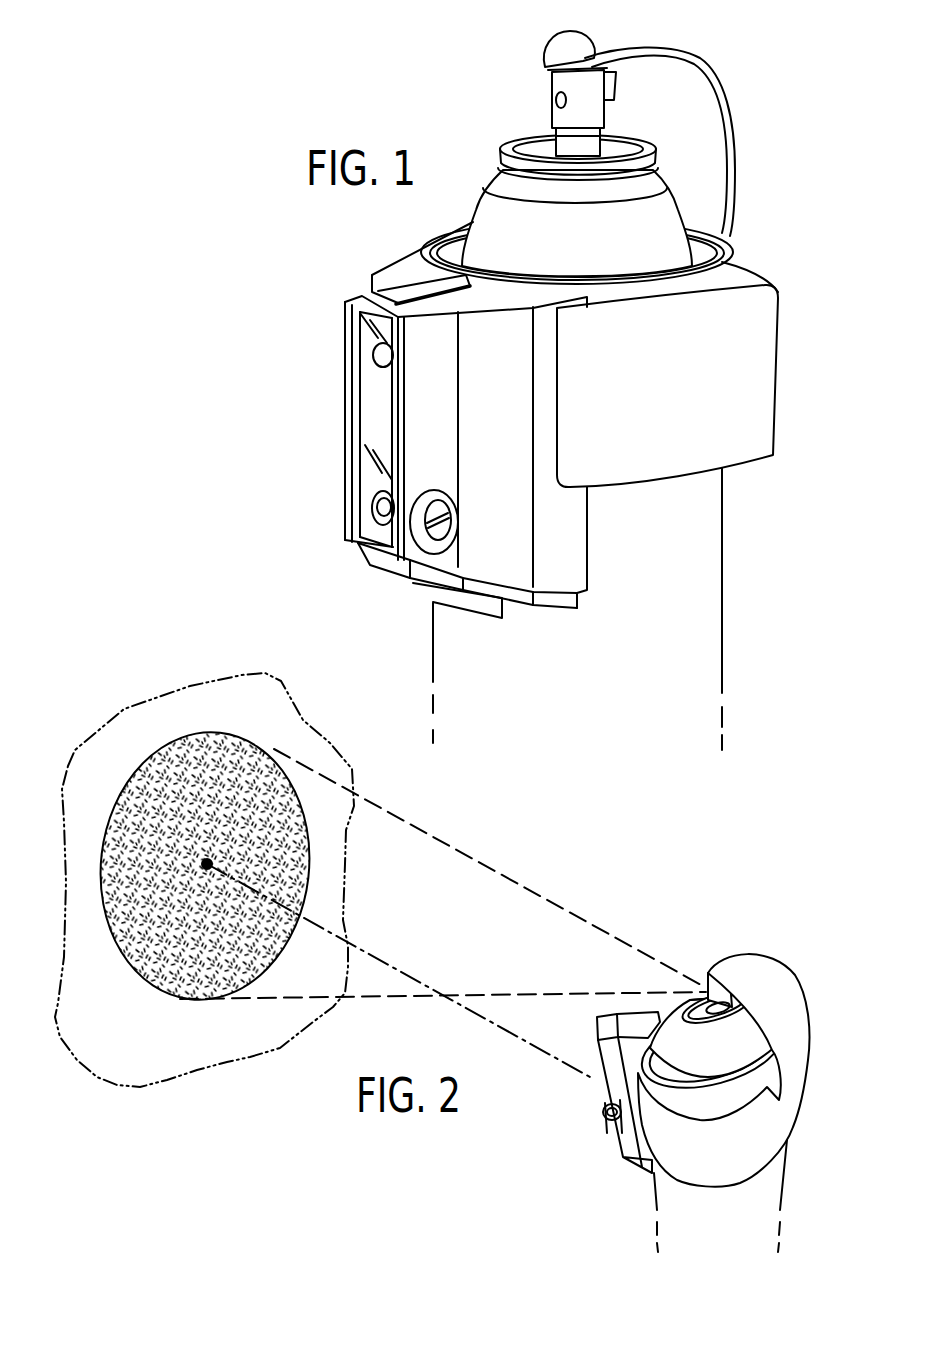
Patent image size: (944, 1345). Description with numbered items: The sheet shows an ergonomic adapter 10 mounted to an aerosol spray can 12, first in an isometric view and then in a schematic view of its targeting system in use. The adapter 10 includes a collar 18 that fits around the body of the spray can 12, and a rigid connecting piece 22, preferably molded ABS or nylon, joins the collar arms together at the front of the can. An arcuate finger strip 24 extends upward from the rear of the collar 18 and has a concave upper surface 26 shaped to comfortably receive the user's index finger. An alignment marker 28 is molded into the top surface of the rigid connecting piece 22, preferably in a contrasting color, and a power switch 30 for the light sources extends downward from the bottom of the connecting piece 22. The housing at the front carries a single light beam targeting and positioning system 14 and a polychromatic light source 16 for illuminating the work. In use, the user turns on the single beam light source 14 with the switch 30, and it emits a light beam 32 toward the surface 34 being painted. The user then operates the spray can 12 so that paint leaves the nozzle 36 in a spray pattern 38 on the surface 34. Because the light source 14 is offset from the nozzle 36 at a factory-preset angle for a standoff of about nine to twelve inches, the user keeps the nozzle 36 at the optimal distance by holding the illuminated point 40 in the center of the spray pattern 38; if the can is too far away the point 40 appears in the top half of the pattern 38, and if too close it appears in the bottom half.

In FIG. 1, the ergonomic adapter 10 is at (622, 375).
In FIG. 2, the ergonomic adapter 10 is at (731, 1061).
In FIG. 1, the aerosol spray can 12 is at (697, 557).
In FIG. 2, the aerosol spray can 12 is at (773, 1183).
In FIG. 1, the single light beam targeting and positioning system 14 is at (436, 452).
In FIG. 2, the single light beam targeting and positioning system 14 is at (615, 1170).
In FIG. 1, the polychromatic light source 16 is at (390, 352).
In FIG. 1, the collar 18 is at (763, 345).
In FIG. 2, the collar 18 is at (780, 958).
In FIG. 1, the rigid connecting piece 22 is at (409, 301).
In FIG. 1, the arcuate finger strip 24 is at (690, 54).
In FIG. 1, the concave upper surface 26 is at (583, 43).
In FIG. 1, the alignment marker 28 is at (460, 292).
In FIG. 1, the power switch 30 is at (486, 606).
In FIG. 2, the light beam 32 is at (545, 1057).
In FIG. 2, the surface 34 is at (128, 742).
In FIG. 1, the spray can nozzle 36 is at (570, 87).
In FIG. 2, the spray can nozzle 36 is at (707, 983).
In FIG. 2, the spray pattern 38 is at (203, 750).
In FIG. 2, the illuminated point 40 is at (205, 866).